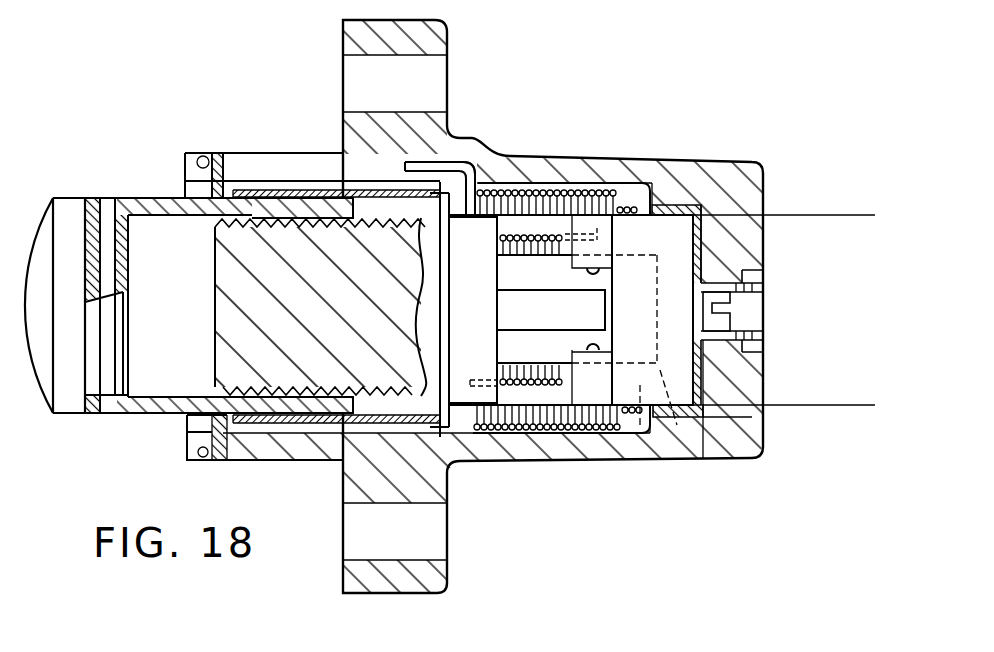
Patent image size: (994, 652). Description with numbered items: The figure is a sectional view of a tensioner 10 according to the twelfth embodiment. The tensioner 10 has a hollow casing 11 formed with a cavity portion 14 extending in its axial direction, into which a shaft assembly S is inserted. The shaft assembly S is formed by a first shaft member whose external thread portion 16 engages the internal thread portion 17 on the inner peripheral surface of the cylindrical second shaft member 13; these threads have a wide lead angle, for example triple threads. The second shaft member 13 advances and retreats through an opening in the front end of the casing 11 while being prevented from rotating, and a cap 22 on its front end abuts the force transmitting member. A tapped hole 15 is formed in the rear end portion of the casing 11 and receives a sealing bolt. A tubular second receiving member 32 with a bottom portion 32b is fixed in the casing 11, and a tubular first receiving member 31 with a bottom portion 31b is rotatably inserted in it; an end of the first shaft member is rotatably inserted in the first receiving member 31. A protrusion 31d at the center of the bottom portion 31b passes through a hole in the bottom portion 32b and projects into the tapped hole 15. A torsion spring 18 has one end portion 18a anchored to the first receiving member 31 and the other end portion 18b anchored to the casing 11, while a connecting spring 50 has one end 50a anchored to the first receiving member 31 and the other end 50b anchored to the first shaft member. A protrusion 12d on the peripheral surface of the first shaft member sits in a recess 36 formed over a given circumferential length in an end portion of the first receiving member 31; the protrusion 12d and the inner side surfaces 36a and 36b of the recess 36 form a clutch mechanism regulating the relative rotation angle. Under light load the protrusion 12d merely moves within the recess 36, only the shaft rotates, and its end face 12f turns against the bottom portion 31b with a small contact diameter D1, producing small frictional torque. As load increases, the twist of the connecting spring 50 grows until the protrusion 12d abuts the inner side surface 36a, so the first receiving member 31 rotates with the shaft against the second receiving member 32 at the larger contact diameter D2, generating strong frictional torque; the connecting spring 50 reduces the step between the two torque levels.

The tensioner 10 is at (110, 65).
The casing 11 is at (507, 463).
The protrusion 12d is at (520, 400).
The end face 12f is at (673, 425).
The second shaft member 13 is at (161, 198).
The cavity portion 14 is at (291, 189).
The tapped hole 15 is at (745, 288).
The external thread portion 16 is at (250, 394).
The internal thread portion 17 is at (307, 386).
The torsion spring 18 is at (532, 196).
The end portion of torsion spring 18a is at (660, 420).
The other end portion of torsion spring 18b is at (449, 155).
The cap 22 is at (42, 247).
The first receiving member 31 is at (627, 384).
The bottom portion of first receiving member 31b is at (690, 273).
The protrusion of first receiving member 31d is at (732, 325).
The second receiving member 32 is at (700, 423).
The bottom portion of second receiving member 32b is at (707, 381).
The recess 36 is at (648, 283).
The inner side surface of recess 36a is at (608, 283).
The inner side surface of recess 36b is at (582, 384).
The connecting spring 50 is at (578, 187).
The end of connecting spring 50a is at (598, 188).
The other end of connecting spring 50b is at (452, 405).
The shaft assembly S is at (167, 425).
The contact diameter D1 is at (677, 257).
The contact diameter D2 is at (867, 217).